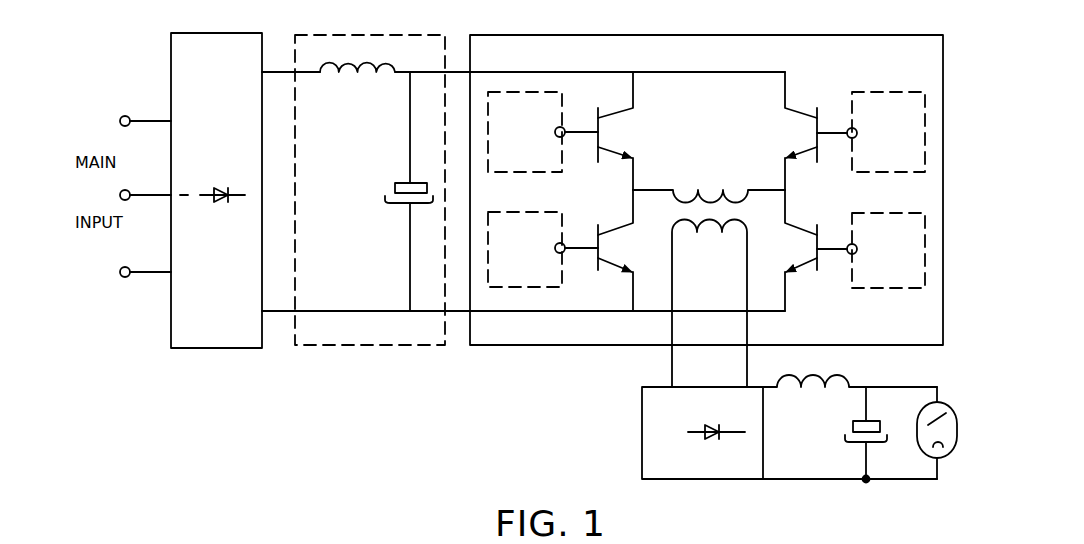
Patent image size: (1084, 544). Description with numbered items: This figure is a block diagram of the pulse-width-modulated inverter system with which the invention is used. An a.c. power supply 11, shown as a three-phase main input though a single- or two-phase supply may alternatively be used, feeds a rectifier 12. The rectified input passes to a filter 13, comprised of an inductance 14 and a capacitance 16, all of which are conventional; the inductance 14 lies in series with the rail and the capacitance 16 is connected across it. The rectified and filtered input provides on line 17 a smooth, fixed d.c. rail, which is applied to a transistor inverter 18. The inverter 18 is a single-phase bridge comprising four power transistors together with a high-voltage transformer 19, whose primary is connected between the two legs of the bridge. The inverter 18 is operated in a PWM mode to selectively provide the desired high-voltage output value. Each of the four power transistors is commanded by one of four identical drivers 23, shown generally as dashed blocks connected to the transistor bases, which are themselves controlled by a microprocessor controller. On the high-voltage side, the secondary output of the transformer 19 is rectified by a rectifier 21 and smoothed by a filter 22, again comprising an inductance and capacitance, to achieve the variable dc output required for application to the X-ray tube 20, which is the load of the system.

The a.c. power supply 11 is at (150, 121).
The rectifier 12 is at (228, 10).
The filter 13 is at (352, 10).
The inductance 14 is at (358, 72).
The capacitance 16 is at (403, 185).
The line 17 is at (455, 72).
The transistor inverter 18 is at (800, 35).
The high-voltage transformer 19 is at (726, 190).
The X-ray tube 20 is at (958, 420).
The rectifier 21 is at (713, 481).
The filter 22 is at (848, 481).
The drivers 23 is at (540, 105).